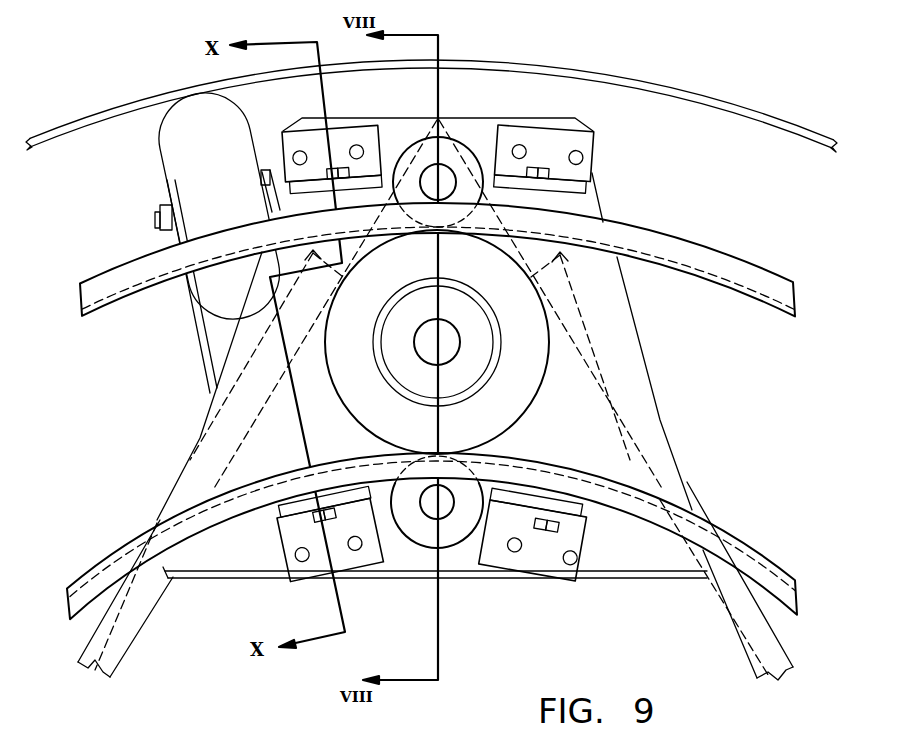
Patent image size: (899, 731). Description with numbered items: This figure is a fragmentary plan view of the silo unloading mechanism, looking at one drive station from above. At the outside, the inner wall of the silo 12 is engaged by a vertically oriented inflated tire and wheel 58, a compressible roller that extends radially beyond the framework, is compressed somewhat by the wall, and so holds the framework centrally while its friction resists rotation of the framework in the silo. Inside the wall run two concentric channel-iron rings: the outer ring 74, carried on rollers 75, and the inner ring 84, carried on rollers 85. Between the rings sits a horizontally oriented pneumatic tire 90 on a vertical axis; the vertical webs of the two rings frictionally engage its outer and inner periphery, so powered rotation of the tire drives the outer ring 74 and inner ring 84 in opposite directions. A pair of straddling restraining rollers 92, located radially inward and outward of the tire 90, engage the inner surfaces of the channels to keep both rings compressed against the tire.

The silo 12 is at (697, 97).
The inflated tire and wheel 58 is at (180, 146).
The outer ring 74 is at (688, 256).
The rollers 75 is at (300, 227).
The inner ring 84 is at (743, 563).
The rollers 85 is at (277, 492).
The pneumatic tire 90 is at (522, 388).
The restraining rollers 92 is at (463, 143).